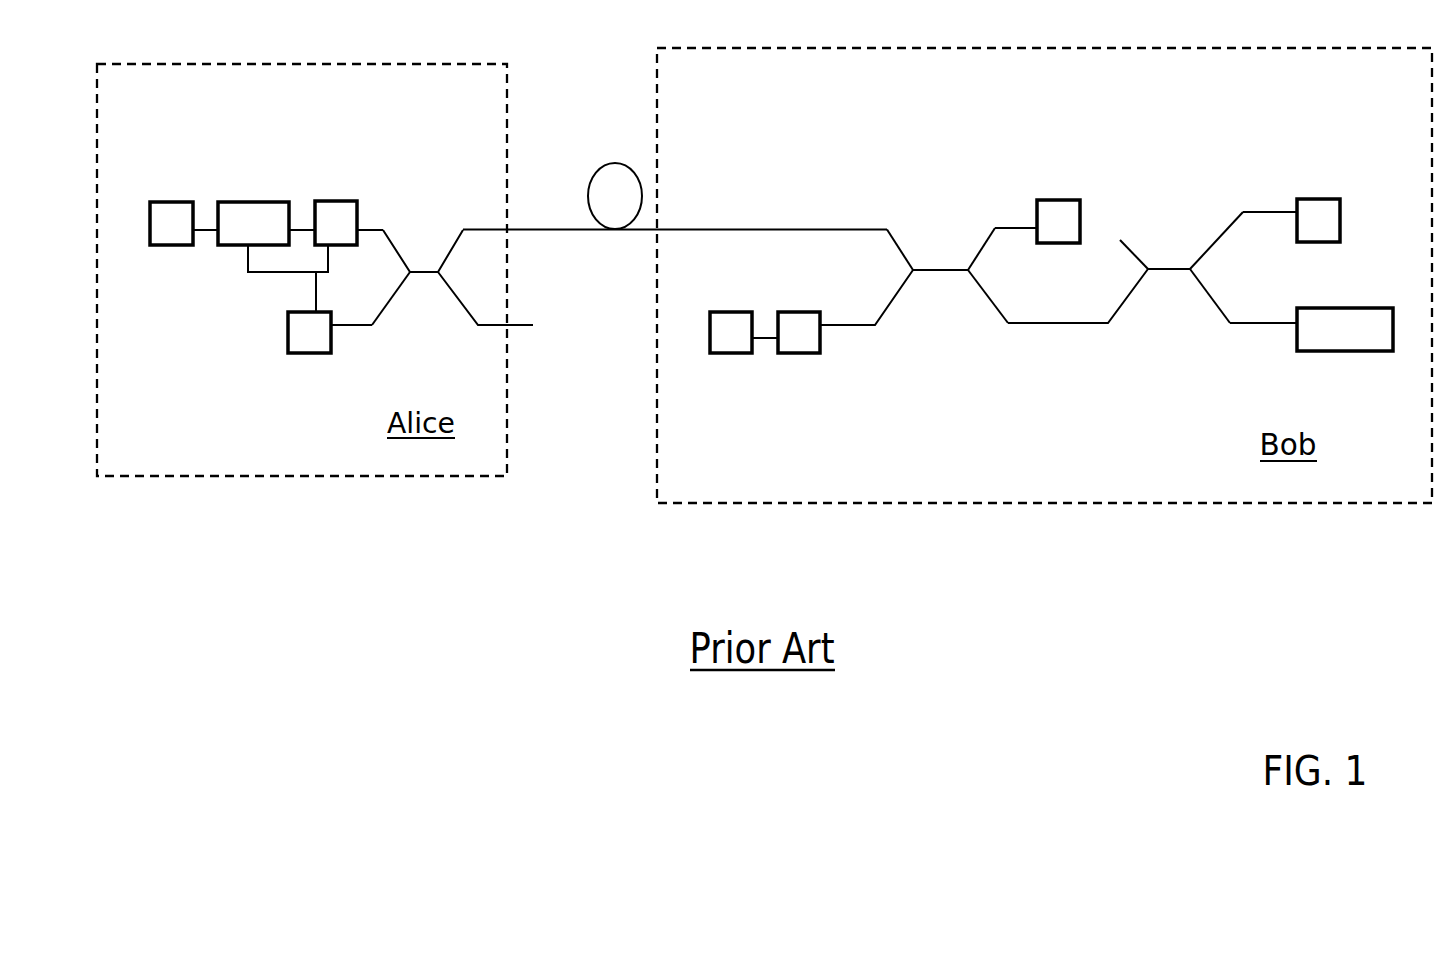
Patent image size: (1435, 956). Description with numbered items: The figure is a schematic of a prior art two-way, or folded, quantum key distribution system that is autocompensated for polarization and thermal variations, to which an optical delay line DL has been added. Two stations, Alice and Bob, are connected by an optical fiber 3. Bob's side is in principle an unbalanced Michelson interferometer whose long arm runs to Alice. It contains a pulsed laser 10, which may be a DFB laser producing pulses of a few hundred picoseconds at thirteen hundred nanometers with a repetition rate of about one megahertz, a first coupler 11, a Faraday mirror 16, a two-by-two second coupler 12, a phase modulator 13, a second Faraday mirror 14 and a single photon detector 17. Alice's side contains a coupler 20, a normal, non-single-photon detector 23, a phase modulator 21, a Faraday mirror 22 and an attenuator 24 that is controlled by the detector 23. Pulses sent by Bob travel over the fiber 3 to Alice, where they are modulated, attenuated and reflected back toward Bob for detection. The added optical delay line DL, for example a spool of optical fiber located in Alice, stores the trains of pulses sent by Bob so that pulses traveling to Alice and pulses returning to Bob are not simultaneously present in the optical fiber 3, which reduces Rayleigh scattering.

The optical fiber 3 is at (533, 228).
The optical delay line DL is at (603, 173).
The pulsed laser 10 is at (1353, 351).
The first coupler 11 is at (1160, 285).
The second coupler 12 is at (943, 287).
The phase modulator 13 is at (790, 353).
The second Faraday mirror 14 is at (722, 353).
The Faraday mirror 16 is at (1070, 198).
The single photon detector 17 is at (1327, 199).
The coupler 20 is at (425, 255).
The phase modulator 21 is at (247, 202).
The Faraday mirror 22 is at (164, 202).
The normal detector 23 is at (288, 353).
The attenuator 24 is at (342, 201).